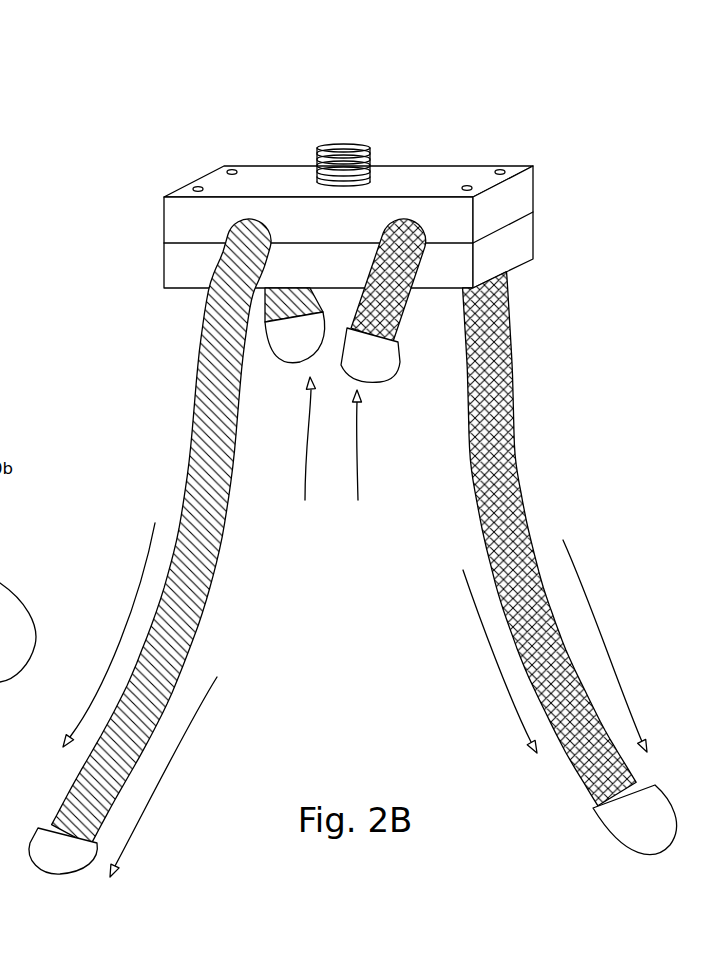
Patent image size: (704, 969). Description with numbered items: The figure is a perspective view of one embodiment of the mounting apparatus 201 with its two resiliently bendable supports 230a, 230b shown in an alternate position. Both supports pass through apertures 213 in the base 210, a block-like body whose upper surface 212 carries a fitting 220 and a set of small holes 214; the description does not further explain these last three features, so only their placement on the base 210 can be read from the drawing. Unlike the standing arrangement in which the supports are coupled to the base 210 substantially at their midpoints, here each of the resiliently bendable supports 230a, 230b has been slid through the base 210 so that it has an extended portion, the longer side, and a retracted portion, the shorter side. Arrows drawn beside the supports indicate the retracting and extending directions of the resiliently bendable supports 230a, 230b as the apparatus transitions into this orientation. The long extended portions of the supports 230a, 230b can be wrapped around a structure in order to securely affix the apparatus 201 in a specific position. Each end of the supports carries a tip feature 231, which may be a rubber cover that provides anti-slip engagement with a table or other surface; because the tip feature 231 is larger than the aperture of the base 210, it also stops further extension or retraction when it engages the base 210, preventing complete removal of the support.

The mounting apparatus 201 is at (134, 86).
The base 210 is at (150, 183).
The top surface of manifold 212 is at (277, 177).
The apertures 213 is at (227, 233).
The mounting holes 214 is at (198, 187).
The threaded inlet fitting 220 is at (334, 152).
The resiliently bendable support 230a is at (268, 298).
The resiliently bendable support 230b is at (400, 332).
The tip feature 231 is at (286, 355).